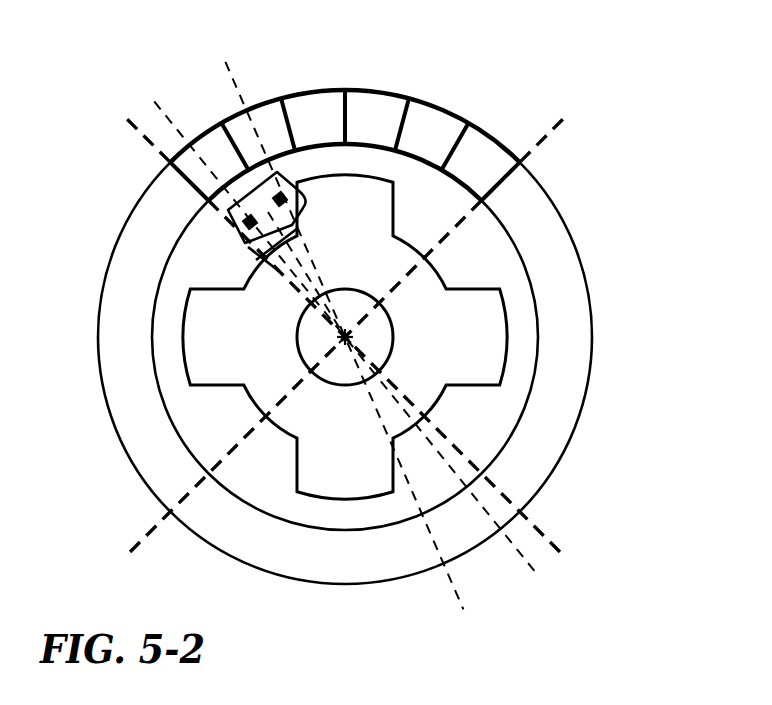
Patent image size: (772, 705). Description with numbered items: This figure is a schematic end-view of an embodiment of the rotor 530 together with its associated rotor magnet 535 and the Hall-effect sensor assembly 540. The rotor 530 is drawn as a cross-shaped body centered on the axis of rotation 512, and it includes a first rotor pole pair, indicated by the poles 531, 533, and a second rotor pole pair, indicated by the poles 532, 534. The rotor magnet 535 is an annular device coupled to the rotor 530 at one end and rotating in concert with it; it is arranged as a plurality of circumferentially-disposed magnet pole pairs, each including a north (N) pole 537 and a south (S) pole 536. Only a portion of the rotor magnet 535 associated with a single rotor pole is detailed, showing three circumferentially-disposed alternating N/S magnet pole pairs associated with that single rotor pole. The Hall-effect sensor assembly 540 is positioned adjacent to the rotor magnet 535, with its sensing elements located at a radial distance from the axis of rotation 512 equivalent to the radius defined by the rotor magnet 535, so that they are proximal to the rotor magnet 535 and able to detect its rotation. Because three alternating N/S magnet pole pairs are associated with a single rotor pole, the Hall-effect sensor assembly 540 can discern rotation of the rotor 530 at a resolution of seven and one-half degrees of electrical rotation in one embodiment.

The rotor 530 is at (346, 326).
The first rotor pole 531 is at (340, 197).
The second rotor pole 532 is at (480, 348).
The first rotor pole 533 is at (345, 482).
The second rotor pole 534 is at (210, 335).
The rotor magnet 535 is at (525, 458).
The south pole 536 is at (344, 104).
The north pole 537 is at (376, 92).
The Hall-effect sensor assembly 540 is at (240, 232).
The axis of rotation 512 is at (358, 334).